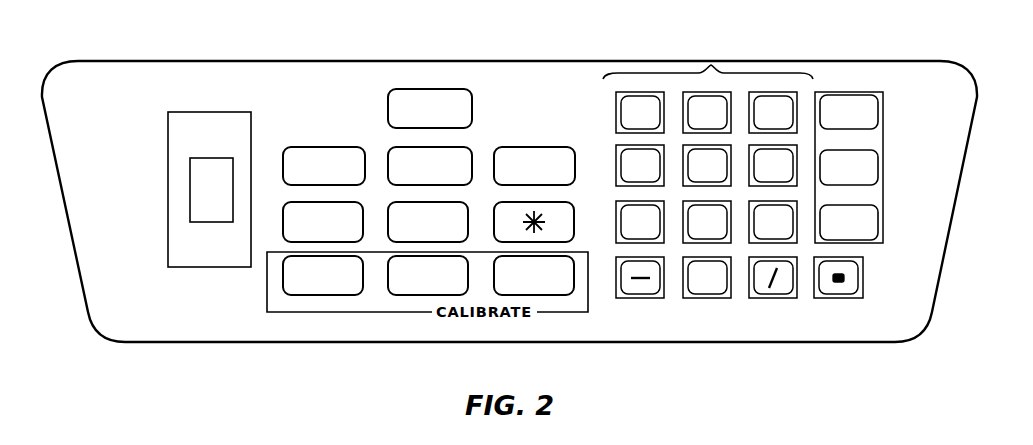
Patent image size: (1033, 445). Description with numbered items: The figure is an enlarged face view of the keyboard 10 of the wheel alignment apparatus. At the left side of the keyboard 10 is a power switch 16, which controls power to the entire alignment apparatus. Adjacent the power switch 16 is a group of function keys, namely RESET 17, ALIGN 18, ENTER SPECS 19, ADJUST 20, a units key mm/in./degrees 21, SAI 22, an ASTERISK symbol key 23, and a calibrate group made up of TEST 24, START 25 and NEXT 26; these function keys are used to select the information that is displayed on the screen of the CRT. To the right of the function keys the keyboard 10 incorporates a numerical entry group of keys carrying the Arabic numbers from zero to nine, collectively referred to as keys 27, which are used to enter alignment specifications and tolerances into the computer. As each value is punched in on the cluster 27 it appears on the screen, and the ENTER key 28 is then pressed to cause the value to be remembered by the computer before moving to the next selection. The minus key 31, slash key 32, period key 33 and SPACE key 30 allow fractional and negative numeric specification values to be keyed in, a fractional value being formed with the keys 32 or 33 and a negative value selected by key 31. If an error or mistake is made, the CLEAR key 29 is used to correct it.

The keyboard 10 is at (197, 50).
The power switch 16 is at (200, 190).
The RESET key 17 is at (390, 102).
The ALIGN key 18 is at (317, 148).
The ENTER SPECS key 19 is at (462, 151).
The ADJUST key 20 is at (545, 148).
The mm/in./degree units key 21 is at (284, 217).
The SAI key 22 is at (450, 206).
The ASTERISK symbol key 23 is at (556, 206).
The TEST key 24 is at (297, 290).
The START key 25 is at (403, 290).
The NEXT key 26 is at (553, 290).
The numerical entry keys 27 is at (708, 166).
The ENTER key 28 is at (879, 122).
The CLEAR key 29 is at (879, 182).
The SPACE key 30 is at (878, 239).
The minus key 31 is at (645, 294).
The slash key 32 is at (775, 294).
The period key 33 is at (840, 294).